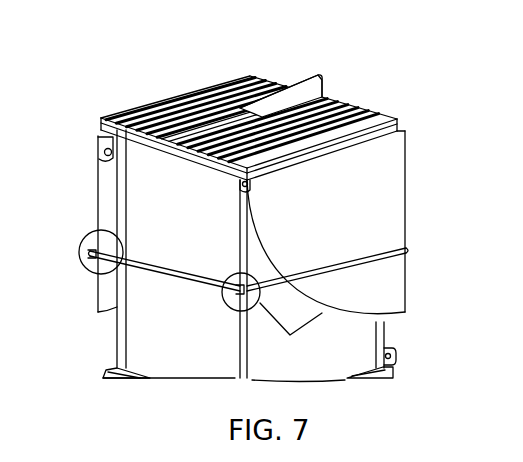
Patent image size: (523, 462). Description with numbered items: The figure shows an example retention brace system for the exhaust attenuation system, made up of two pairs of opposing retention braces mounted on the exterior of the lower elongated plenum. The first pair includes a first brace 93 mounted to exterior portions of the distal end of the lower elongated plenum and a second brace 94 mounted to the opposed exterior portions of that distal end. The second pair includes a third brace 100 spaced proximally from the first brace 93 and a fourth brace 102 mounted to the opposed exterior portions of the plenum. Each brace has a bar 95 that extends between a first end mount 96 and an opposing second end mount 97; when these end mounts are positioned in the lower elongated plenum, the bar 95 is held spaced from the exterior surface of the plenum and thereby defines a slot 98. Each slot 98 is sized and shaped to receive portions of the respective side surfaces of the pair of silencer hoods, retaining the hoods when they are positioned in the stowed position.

The third brace 100 is at (420, 135).
The fourth brace 102 is at (274, 80).
The second brace 94 is at (102, 155).
The first brace 93 is at (236, 185).
The slot 98 is at (360, 255).
The second end mount 97 is at (80, 247).
The bar 95 is at (85, 257).
The first end mount 96 is at (286, 332).